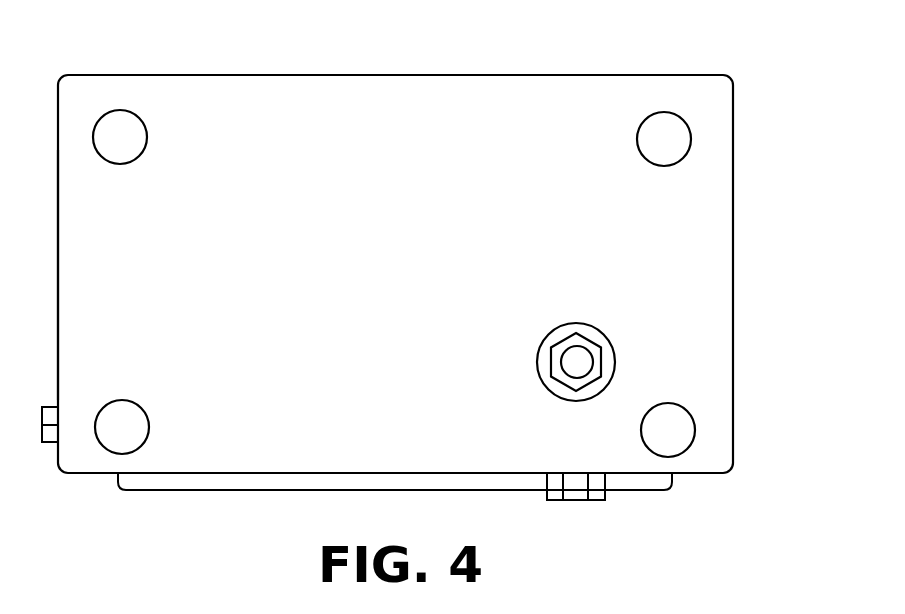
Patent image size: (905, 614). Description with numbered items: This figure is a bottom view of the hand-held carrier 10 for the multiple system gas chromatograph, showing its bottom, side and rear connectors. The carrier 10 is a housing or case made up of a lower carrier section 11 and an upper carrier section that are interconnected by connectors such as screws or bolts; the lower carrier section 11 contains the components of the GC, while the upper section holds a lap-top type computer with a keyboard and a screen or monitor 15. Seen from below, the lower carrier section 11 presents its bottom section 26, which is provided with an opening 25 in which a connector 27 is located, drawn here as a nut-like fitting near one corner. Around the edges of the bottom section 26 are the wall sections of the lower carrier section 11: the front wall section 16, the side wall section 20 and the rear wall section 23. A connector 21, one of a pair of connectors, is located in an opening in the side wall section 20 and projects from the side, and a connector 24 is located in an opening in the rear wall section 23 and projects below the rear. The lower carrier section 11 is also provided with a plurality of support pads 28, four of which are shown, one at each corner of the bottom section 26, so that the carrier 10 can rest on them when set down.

The hand-held carrier 10 is at (617, 53).
The lower carrier section 11 is at (773, 298).
The screen or monitor 15 is at (200, 483).
The front wall section 16 is at (398, 74).
The side wall section 20 is at (58, 238).
The connector 21 is at (45, 443).
The rear wall section 23 is at (295, 473).
The connector 24 is at (598, 500).
The opening 25 is at (567, 400).
The bottom section 26 is at (415, 262).
The connector 27 is at (586, 350).
The support pads 28 is at (147, 128).